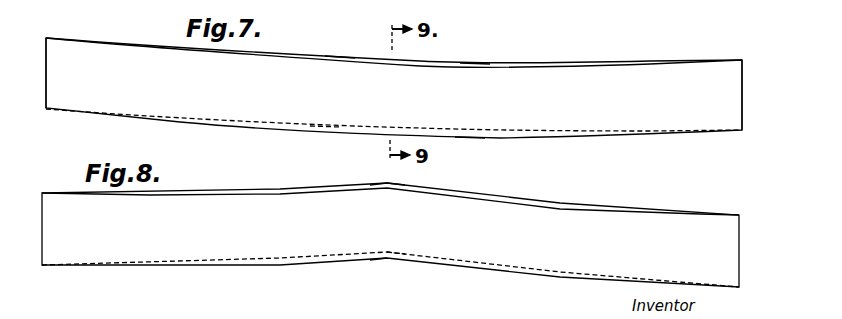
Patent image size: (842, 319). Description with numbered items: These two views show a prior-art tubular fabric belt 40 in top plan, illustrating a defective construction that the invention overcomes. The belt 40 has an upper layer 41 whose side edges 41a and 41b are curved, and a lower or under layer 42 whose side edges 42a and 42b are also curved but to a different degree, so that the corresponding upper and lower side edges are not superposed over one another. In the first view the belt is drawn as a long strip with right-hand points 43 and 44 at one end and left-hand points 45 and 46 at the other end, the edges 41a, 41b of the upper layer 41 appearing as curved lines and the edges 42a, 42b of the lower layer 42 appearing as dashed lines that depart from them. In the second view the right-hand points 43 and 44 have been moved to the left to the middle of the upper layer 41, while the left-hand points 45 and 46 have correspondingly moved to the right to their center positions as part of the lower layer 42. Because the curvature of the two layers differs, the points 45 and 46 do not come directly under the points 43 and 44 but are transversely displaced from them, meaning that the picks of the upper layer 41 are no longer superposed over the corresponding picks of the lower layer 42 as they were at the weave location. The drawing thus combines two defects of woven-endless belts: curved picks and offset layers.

In FIG. 7, the belt 40 is at (517, 78).
In FIG. 8, the belt 40 is at (488, 210).
In FIG. 7, the upper layer 41 is at (575, 77).
In FIG. 8, the upper layer 41 is at (551, 216).
In FIG. 7, the side edge of upper layer 41a is at (473, 67).
In FIG. 7, the side edge of upper layer 41b is at (467, 138).
In FIG. 7, the lower layer 42 is at (427, 61).
In FIG. 8, the lower layer 42 is at (426, 191).
In FIG. 7, the side edge of lower layer 42a is at (339, 56).
In FIG. 7, the side edge of lower layer 42b is at (324, 128).
In FIG. 7, the right-hand point 43 is at (743, 58).
In FIG. 8, the right-hand point 43 is at (387, 187).
In FIG. 7, the right-hand point 44 is at (744, 131).
In FIG. 8, the right-hand point 44 is at (383, 261).
In FIG. 7, the left-hand point 45 is at (46, 37).
In FIG. 8, the left-hand point 45 is at (389, 183).
In FIG. 7, the left-hand point 46 is at (46, 109).
In FIG. 8, the left-hand point 46 is at (388, 258).